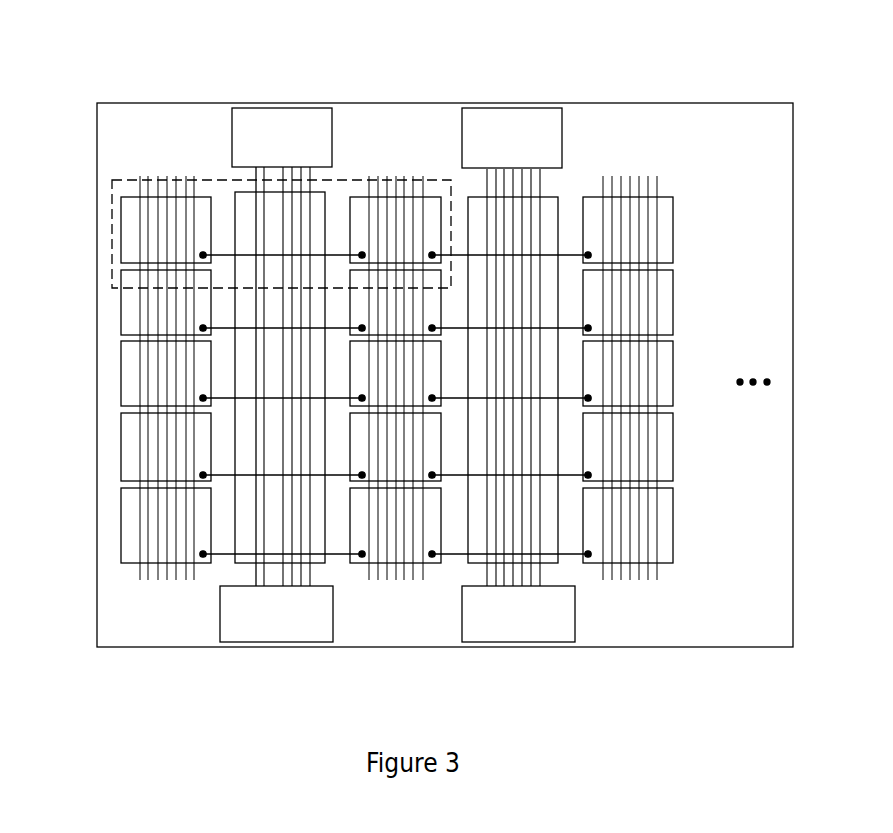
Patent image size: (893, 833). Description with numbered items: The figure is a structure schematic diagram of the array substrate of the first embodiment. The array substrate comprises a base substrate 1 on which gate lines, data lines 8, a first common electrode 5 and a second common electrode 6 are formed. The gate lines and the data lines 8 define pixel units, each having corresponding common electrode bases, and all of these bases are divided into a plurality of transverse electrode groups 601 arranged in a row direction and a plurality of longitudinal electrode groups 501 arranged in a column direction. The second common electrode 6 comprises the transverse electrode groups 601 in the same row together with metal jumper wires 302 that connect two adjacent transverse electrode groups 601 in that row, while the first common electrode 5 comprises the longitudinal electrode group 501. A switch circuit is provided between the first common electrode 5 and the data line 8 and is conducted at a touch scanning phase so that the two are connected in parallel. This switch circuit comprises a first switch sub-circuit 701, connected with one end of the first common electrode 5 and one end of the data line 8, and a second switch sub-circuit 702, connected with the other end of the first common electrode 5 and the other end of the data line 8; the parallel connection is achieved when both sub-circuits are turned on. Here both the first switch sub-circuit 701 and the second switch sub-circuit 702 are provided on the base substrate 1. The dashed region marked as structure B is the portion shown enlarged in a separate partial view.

The base substrate 1 is at (680, 102).
The structure B is at (133, 178).
The first common electrode 5 is at (339, 189).
The second common electrode 6 is at (691, 233).
The data line 8 is at (254, 176).
The metal jumper wire 302 is at (220, 398).
The longitudinal electrode group 501 is at (481, 196).
The transverse electrode group 601 is at (122, 243).
The first switch sub-circuit 701 is at (287, 108).
The second switch sub-circuit 702 is at (333, 605).